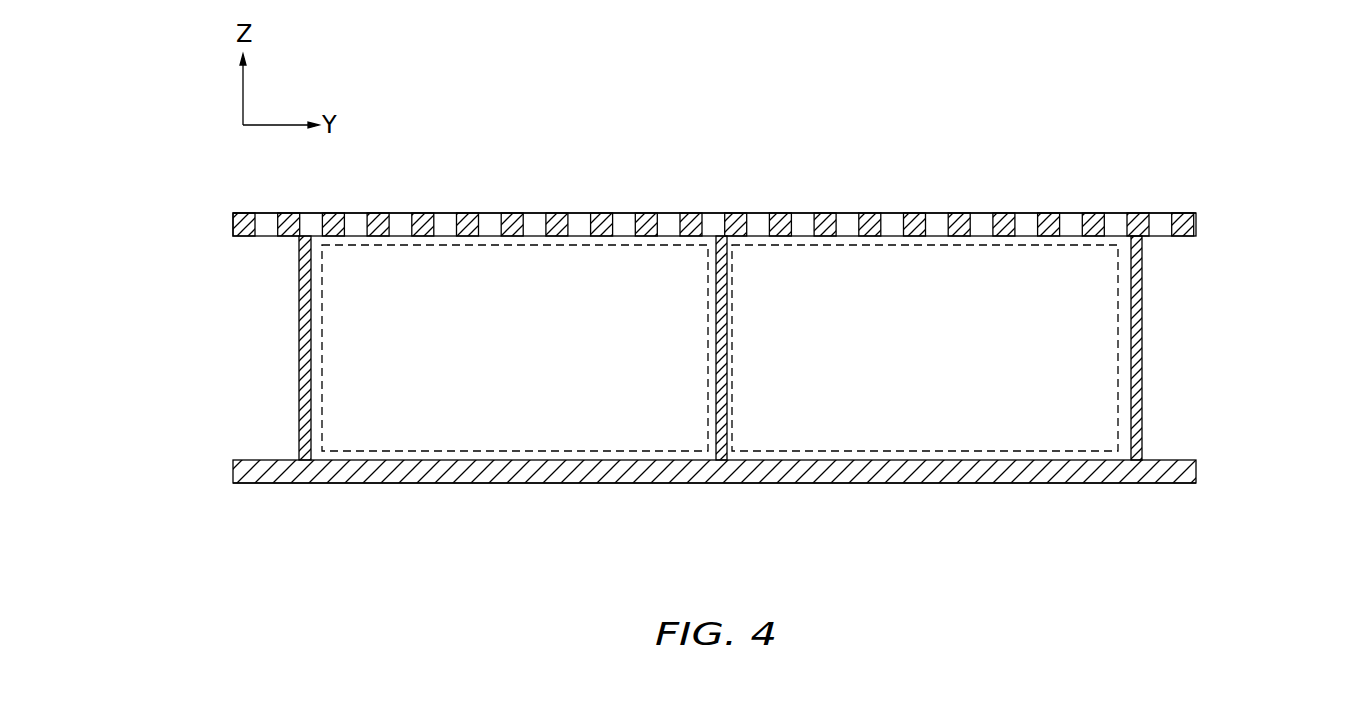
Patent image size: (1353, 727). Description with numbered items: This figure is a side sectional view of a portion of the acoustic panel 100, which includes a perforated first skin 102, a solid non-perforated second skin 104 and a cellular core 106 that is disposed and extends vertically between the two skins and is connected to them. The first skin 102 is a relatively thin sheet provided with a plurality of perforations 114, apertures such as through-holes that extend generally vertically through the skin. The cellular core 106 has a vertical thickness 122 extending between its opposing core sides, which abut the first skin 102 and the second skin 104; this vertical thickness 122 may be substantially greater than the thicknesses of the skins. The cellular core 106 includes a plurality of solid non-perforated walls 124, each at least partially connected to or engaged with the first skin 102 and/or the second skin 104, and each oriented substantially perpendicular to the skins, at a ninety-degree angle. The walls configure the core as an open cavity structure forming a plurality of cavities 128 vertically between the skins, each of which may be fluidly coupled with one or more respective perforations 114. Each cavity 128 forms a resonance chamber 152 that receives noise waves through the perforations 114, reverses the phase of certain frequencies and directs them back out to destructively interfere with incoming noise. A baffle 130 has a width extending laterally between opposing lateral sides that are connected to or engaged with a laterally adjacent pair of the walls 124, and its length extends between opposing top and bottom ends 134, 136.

The acoustic panel 100 is at (1074, 138).
The first skin 102 is at (1196, 222).
The second skin 104 is at (1196, 473).
The cellular core 106 is at (1207, 236).
The perforations 114 is at (580, 213).
The vertical thickness 122 is at (183, 235).
The walls 124 is at (311, 424).
The cavities 128 is at (562, 452).
The resonance chamber 152 is at (1008, 452).
The baffle 130 is at (484, 418).
The top end 134 is at (673, 213).
The bottom end 136 is at (650, 462).